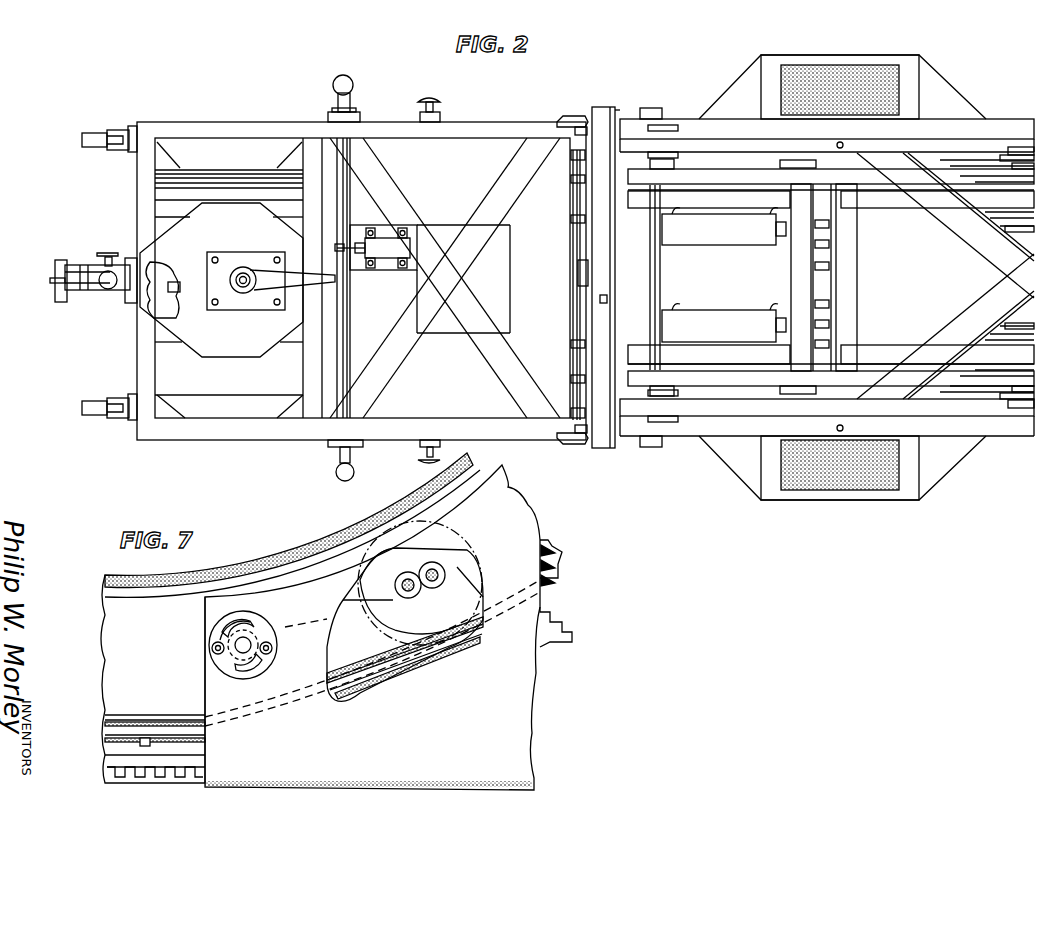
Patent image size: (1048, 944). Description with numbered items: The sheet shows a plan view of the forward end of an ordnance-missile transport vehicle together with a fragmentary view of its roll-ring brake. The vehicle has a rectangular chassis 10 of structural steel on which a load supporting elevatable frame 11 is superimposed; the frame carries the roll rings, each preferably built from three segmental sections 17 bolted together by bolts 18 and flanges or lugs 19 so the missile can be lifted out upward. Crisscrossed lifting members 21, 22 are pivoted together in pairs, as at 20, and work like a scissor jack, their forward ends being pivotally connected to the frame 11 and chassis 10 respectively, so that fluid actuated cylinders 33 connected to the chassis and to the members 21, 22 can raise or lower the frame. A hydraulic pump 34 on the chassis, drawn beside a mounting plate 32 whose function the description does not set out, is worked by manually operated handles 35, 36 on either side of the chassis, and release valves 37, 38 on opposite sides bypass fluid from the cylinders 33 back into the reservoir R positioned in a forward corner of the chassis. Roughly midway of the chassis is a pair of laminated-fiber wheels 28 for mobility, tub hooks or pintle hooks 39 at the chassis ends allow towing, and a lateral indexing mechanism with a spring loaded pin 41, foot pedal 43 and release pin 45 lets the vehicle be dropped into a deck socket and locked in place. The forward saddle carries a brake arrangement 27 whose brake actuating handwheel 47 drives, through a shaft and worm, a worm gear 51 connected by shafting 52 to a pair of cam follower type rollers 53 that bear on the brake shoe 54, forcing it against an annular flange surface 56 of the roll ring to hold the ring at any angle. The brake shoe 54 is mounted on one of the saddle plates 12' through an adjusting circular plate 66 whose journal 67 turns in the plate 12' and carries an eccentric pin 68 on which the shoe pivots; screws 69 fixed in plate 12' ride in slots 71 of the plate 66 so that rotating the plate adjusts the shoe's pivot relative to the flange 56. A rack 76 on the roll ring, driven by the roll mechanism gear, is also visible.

In FIG. 2, the chassis 10 is at (221, 443).
In FIG. 2, the elevatable frame 11 is at (970, 134).
In FIG. 2, the plates 12' is at (632, 306).
In FIG. 7, the plates 12' is at (399, 627).
In FIG. 2, the segmental sections 17 is at (604, 108).
In FIG. 2, the bolts 18 is at (600, 299).
In FIG. 2, the flanges or lugs 19 is at (600, 262).
In FIG. 2, the pivot 20 is at (1006, 147).
In FIG. 2, the lifting members 21 is at (686, 176).
In FIG. 2, the lifting members 22 is at (872, 195).
In FIG. 7, the brake arrangement 27 is at (500, 573).
In FIG. 2, the wheels 28 is at (815, 78).
In FIG. 2, the crank plate 32 is at (310, 285).
In FIG. 2, the fluid actuated cylinders 33 is at (728, 237).
In FIG. 2, the pump 34 is at (387, 258).
In FIG. 2, the manually operated handle 35 is at (336, 472).
In FIG. 2, the manually operated handle 36 is at (355, 90).
In FIG. 2, the release valve 37 is at (424, 455).
In FIG. 2, the release valve 38 is at (430, 100).
In FIG. 2, the tub hooks or pintle hooks 39 is at (92, 140).
In FIG. 2, the spring loaded pin 41 is at (102, 290).
In FIG. 2, the foot pedal 43 is at (60, 300).
In FIG. 2, the release pin 45 is at (109, 254).
In FIG. 2, the brake actuating handwheel 47 is at (567, 114).
In FIG. 7, the worm gear 51 is at (476, 553).
In FIG. 7, the shafting 52 is at (426, 594).
In FIG. 7, the cam follower type rollers 53 is at (422, 566).
In FIG. 7, the brake shoe 54 is at (364, 651).
In FIG. 7, the annular flange surface 56 is at (156, 714).
In FIG. 7, the circular plate 66 is at (262, 622).
In FIG. 7, the journal 67 is at (266, 634).
In FIG. 7, the pin 68 is at (273, 651).
In FIG. 7, the screws 69 is at (218, 656).
In FIG. 7, the slot 71 is at (220, 629).
In FIG. 7, the rack 76 is at (113, 776).
In FIG. 2, the hydraulic fluid reservoir R is at (240, 171).